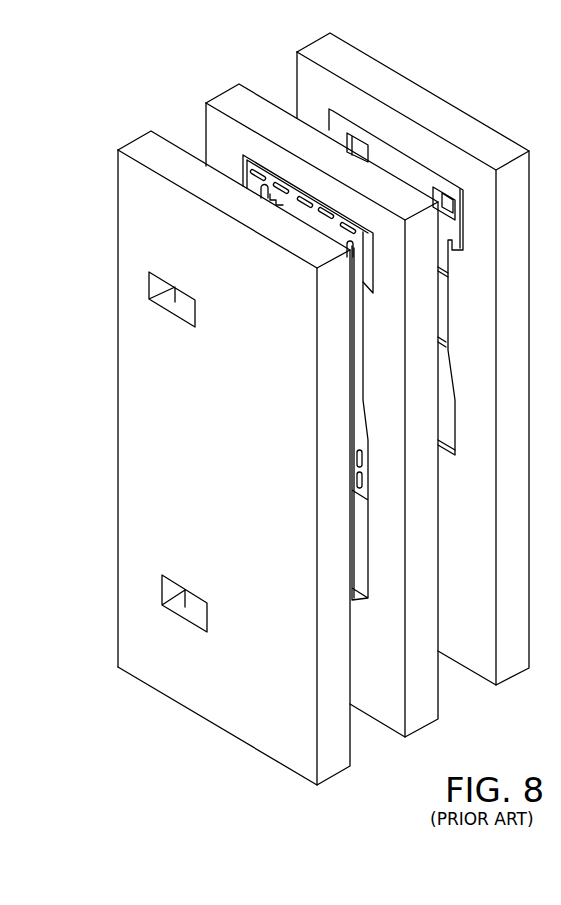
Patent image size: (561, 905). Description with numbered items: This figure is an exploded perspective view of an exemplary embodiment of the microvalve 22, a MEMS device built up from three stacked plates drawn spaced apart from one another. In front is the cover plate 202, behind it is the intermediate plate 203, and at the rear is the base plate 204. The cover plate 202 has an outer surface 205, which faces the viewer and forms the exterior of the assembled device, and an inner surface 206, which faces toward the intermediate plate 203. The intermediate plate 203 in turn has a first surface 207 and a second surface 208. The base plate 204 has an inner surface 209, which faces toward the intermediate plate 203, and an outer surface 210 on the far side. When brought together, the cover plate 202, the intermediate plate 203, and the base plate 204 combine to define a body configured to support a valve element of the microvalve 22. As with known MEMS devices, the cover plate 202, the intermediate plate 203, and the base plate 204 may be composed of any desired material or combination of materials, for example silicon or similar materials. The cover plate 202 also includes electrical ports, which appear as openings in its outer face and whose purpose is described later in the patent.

The microvalve 22 is at (97, 456).
The cover plate 202 is at (112, 190).
The intermediate plate 203 is at (200, 122).
The base plate 204 is at (291, 67).
The outer surface 205 is at (284, 750).
The inner surface 206 is at (164, 134).
The first surface 207 is at (393, 697).
The second surface 208 is at (250, 89).
The inner surface 209 is at (484, 649).
The outer surface 210 is at (341, 41).